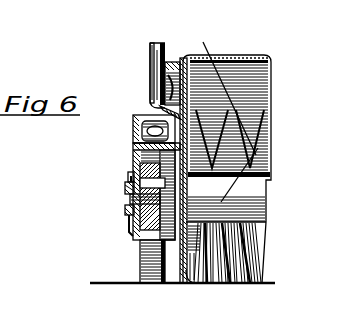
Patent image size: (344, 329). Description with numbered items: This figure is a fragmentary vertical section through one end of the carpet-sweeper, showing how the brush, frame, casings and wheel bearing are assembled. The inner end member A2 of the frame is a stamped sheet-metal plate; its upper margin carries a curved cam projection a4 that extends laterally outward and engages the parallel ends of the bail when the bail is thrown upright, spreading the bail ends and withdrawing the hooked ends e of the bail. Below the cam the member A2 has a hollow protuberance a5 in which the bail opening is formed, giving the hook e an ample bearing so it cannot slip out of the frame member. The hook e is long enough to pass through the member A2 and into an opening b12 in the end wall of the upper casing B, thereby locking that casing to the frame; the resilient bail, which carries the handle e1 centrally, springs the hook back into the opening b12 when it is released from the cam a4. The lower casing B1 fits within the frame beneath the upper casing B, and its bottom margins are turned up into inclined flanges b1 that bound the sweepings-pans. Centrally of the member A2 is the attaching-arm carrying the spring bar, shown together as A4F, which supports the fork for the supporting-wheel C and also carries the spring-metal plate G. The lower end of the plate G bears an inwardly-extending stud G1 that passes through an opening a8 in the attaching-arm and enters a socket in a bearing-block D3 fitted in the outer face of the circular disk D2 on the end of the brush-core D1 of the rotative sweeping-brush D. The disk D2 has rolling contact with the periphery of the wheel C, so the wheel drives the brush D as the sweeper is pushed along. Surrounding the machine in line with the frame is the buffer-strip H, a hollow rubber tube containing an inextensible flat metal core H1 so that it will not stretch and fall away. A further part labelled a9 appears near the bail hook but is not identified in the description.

The upper casing B is at (229, 57).
The openings in end walls of upper casing b12 is at (229, 91).
The lower casing B1 is at (184, 277).
The inclined flanges b1 is at (181, 273).
The sweeper-handle e1 is at (151, 43).
The inner end member of frame A2 is at (153, 72).
The hollow protuberances a5 is at (155, 84).
The curved cam projections a4 is at (170, 65).
The curved member a9 is at (155, 99).
The hooked ends of the bail e is at (140, 118).
The attaching-arm with spring-bar A4F is at (132, 147).
The circular disks D2 is at (143, 228).
The bearing-blocks D3 is at (127, 183).
The openings in attaching-arms a8 is at (128, 197).
The studs G1 is at (125, 210).
The buffer-strip H is at (128, 216).
The spring-metal plates G is at (128, 173).
The core of buffer H1 is at (132, 180).
The supporting-wheels C is at (150, 253).
The rotative sweeping-brush D is at (189, 195).
The brush-core D1 is at (239, 175).